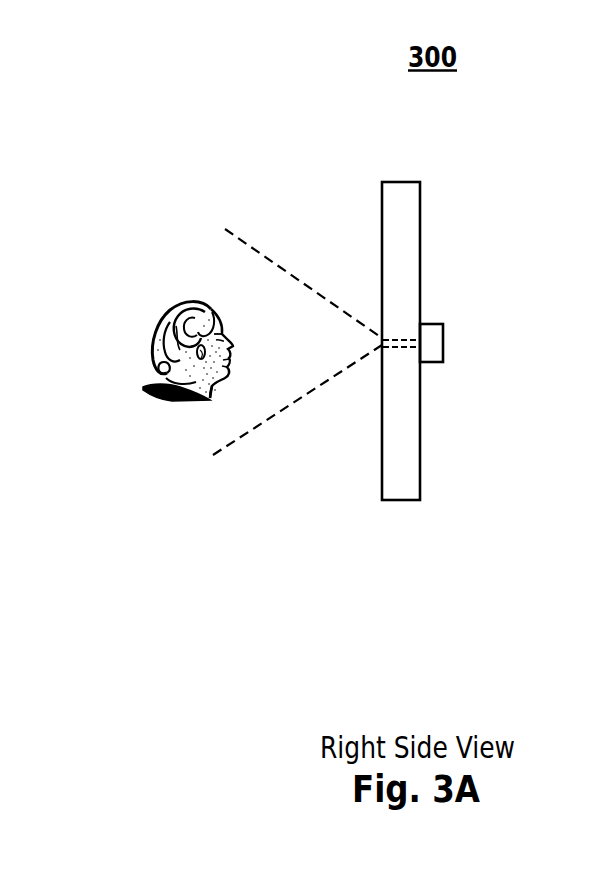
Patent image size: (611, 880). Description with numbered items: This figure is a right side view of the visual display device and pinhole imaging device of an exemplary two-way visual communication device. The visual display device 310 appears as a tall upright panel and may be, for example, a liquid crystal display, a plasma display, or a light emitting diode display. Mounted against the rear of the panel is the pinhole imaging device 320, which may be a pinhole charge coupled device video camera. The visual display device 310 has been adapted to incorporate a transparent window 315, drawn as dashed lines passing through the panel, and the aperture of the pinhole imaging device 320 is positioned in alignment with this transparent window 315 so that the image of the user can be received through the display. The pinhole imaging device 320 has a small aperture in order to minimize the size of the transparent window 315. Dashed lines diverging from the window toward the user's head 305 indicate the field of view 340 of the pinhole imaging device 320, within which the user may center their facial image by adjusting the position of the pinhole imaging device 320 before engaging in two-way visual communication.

The viewer / user 305 is at (183, 343).
The visual display device 310 is at (420, 192).
The transparent window 315 is at (385, 350).
The pinhole imaging device 320 is at (443, 338).
The field of view 340 is at (297, 402).